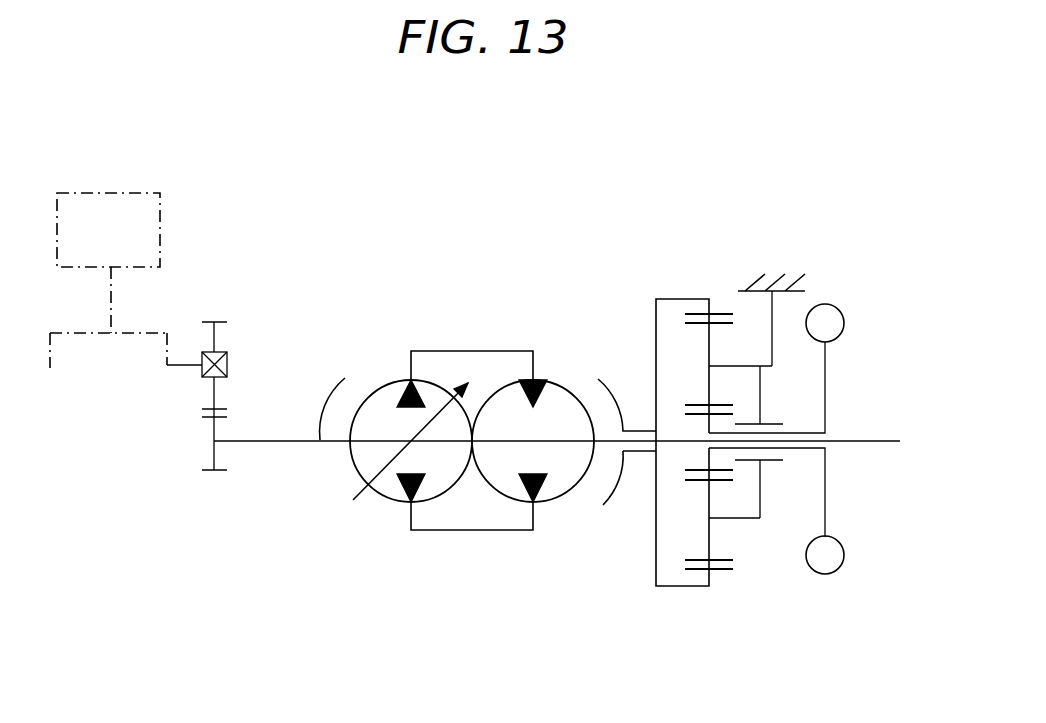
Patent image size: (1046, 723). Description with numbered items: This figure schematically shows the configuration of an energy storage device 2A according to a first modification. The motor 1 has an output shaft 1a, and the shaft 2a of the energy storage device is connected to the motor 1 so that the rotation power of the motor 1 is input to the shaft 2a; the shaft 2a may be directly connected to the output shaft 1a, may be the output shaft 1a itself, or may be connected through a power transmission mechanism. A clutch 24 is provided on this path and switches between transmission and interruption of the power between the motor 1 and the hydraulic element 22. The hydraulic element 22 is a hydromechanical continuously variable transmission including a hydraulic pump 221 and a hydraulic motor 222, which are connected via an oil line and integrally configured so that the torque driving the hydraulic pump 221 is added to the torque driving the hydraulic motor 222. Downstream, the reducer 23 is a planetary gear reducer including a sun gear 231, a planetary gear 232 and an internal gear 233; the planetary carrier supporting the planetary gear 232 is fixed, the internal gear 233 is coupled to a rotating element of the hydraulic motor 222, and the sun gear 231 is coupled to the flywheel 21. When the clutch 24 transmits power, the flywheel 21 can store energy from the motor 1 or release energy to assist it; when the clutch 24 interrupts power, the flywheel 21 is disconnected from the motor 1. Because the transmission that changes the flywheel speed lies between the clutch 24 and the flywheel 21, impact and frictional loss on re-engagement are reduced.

The motor 1 is at (90, 185).
The output shaft 1a is at (112, 293).
The energy storage device 2A is at (540, 227).
The shaft 2a is at (275, 441).
The flywheel 21 is at (835, 320).
The hydraulic element 22 is at (446, 570).
The hydraulic pump 221 is at (378, 382).
The hydraulic motor 222 is at (557, 382).
The reducer 23 is at (661, 615).
The sun gear 231 is at (810, 450).
The planetary gear 232 is at (684, 377).
The internal gear 233 is at (663, 298).
The clutch 24 is at (245, 345).